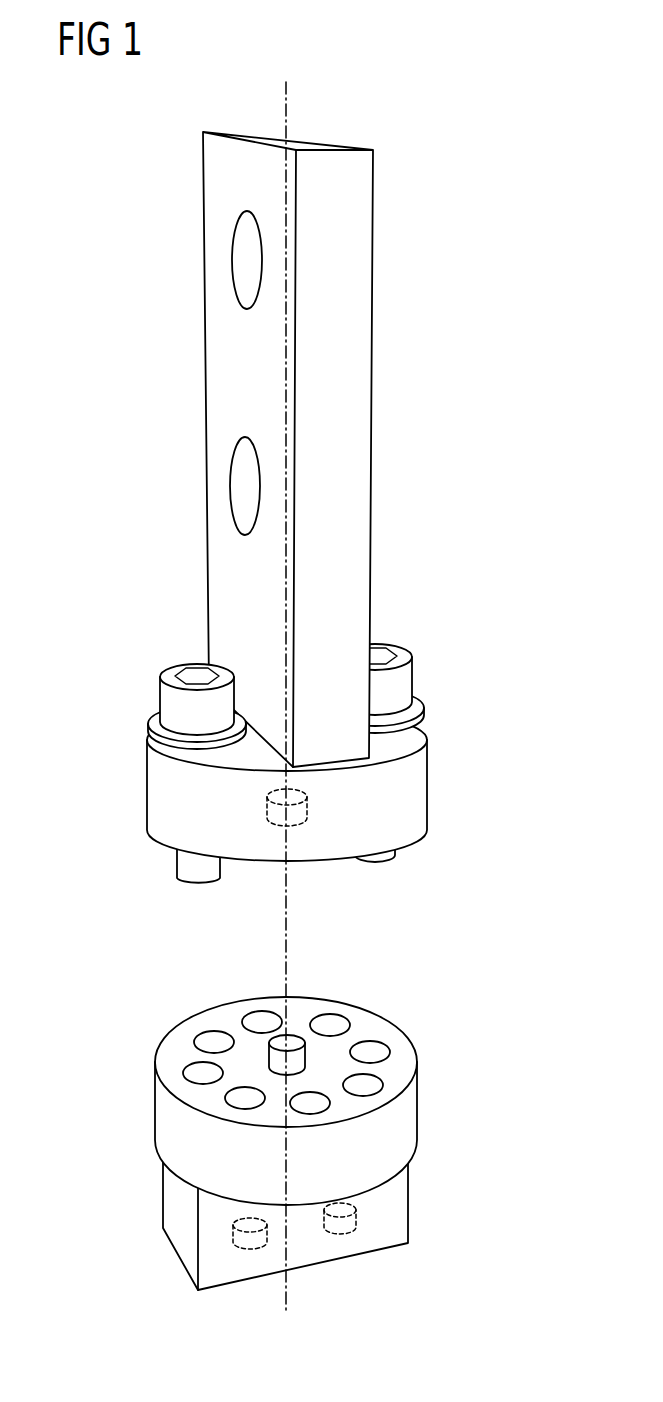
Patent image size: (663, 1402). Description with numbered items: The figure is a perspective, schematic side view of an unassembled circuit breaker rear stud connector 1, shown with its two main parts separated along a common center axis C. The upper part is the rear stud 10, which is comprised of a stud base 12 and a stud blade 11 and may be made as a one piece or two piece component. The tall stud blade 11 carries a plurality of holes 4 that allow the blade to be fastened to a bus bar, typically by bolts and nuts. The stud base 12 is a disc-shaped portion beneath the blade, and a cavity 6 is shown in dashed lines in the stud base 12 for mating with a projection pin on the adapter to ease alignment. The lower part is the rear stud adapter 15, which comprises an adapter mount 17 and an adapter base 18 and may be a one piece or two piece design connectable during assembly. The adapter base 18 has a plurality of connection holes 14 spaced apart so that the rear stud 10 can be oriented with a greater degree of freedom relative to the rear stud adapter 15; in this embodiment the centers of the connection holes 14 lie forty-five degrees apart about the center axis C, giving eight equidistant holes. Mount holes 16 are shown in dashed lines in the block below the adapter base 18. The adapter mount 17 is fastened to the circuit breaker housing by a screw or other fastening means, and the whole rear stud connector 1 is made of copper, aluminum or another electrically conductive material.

The rear stud connector 1 is at (78, 131).
The rear stud 10 is at (481, 150).
The stud blade 11 is at (350, 435).
The hole 4 is at (240, 280).
The stud base 12 is at (410, 789).
The cavity 6 is at (268, 818).
The rear stud adapter 15 is at (481, 992).
The adapter base 18 is at (410, 1125).
The connection hole 14 is at (190, 1073).
The adapter mount 17 is at (292, 1037).
The mount hole 16 is at (262, 1252).
The center axis C is at (288, 100).